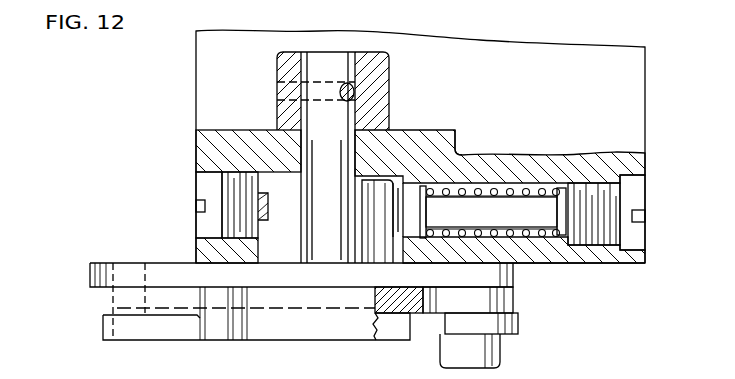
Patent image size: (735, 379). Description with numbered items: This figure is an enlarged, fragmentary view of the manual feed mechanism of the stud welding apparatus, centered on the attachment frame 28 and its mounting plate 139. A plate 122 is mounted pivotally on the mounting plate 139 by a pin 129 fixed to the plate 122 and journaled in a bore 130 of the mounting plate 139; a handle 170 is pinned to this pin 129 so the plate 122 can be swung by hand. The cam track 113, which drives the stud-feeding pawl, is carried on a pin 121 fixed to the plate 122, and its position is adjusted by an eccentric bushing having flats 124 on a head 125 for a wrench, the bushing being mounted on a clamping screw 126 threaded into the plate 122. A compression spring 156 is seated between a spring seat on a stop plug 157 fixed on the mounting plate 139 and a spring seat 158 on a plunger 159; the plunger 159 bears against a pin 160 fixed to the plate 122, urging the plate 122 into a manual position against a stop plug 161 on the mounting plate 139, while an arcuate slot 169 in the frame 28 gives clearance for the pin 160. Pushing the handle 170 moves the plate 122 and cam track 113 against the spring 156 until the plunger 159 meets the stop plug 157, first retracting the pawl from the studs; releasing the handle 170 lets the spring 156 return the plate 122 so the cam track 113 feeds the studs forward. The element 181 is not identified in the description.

The attachment frame 28 is at (648, 112).
The cam track 113 is at (112, 328).
The pin 121 is at (160, 262).
The plate 122 is at (90, 270).
The flats 124 is at (495, 325).
The head 125 is at (515, 335).
The clamping screw 126 is at (500, 358).
The pin 129 is at (312, 140).
The bore 130 is at (372, 147).
The mounting plate 139 is at (460, 145).
The compression spring 156 is at (488, 188).
The stop plug 157 is at (595, 190).
The spring seat 158 is at (424, 200).
The plunger 159 is at (553, 239).
The pin 160 is at (373, 253).
The stop plug 161 is at (257, 205).
The arcuate slot 169 is at (266, 173).
The handle 170 is at (290, 75).
The retainer 181 is at (401, 255).